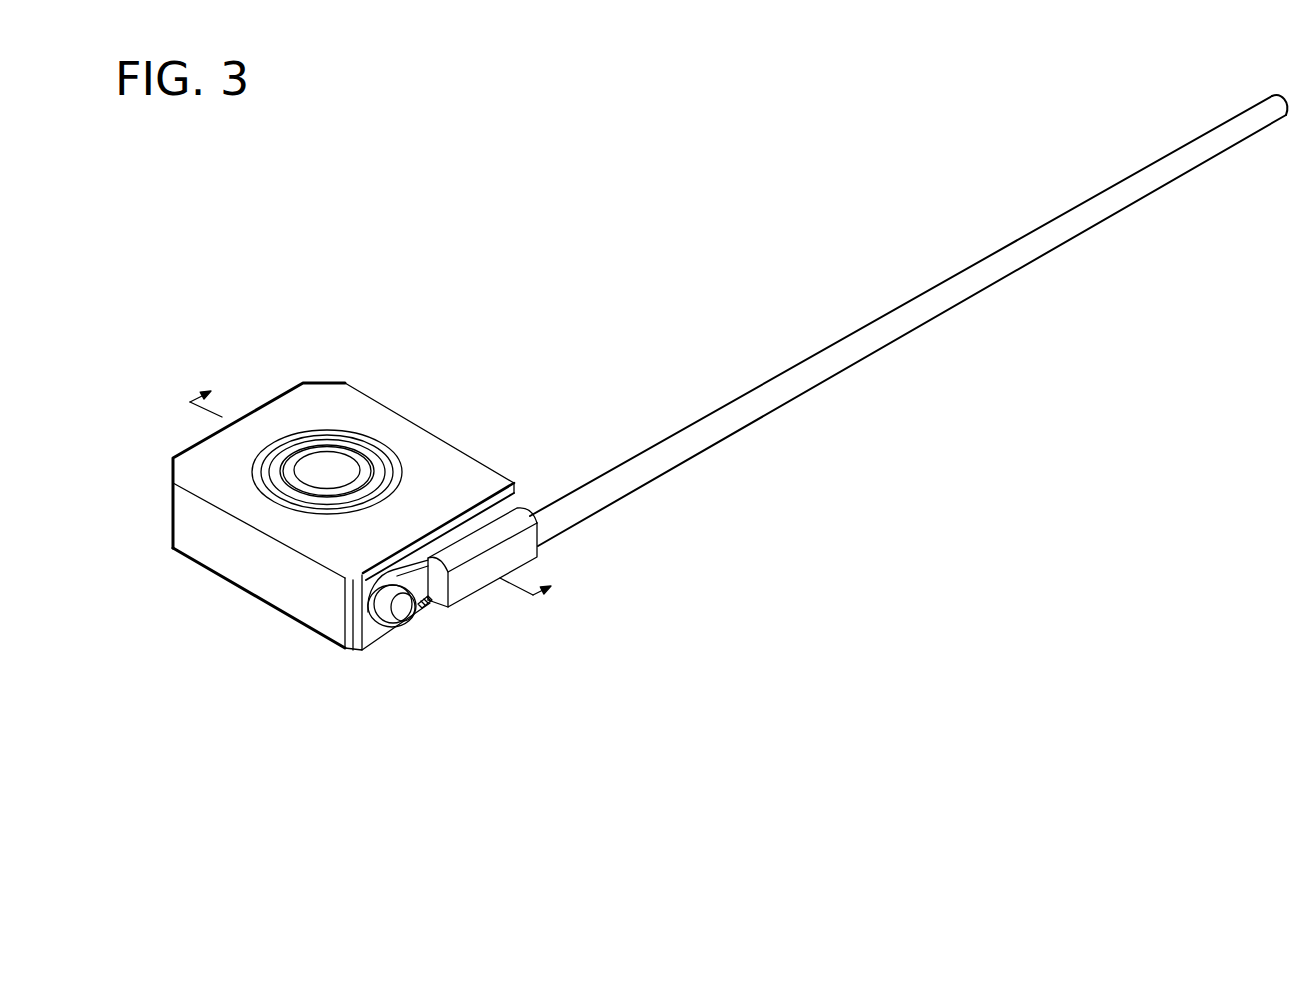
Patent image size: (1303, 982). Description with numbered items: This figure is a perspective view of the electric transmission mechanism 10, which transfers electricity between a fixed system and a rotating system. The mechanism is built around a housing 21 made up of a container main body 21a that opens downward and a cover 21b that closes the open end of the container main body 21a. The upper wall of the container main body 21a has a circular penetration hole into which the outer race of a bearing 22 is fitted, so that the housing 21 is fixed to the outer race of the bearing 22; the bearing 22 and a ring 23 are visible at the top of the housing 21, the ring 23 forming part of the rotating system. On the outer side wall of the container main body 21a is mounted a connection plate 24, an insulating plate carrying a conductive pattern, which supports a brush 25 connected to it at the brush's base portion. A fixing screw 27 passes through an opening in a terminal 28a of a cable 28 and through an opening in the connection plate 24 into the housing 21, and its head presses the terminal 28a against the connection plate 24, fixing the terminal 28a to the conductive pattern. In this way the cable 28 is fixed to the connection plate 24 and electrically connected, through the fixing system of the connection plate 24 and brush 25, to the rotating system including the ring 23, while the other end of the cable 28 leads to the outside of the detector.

The electric transmission mechanism 10 is at (397, 310).
The housing 21 is at (400, 428).
The container main body 21a is at (441, 470).
The cover 21b is at (267, 603).
The bearing 22 is at (336, 430).
The ring 23 is at (292, 458).
The connection plate 24 is at (510, 506).
The brush 25 is at (433, 605).
The fixing screw 27 is at (399, 617).
The cable 28 is at (572, 543).
The terminal 28a is at (367, 606).